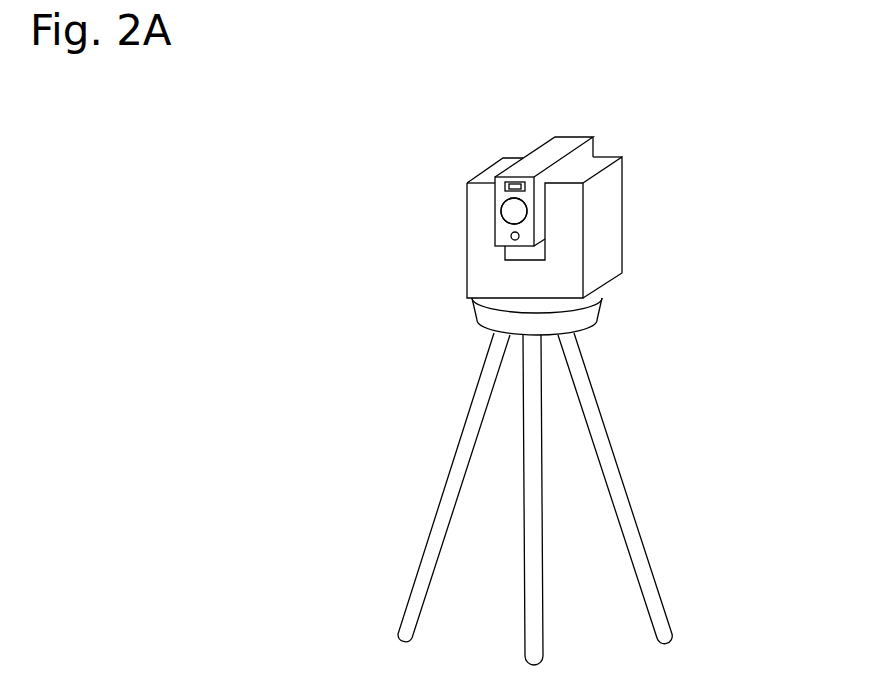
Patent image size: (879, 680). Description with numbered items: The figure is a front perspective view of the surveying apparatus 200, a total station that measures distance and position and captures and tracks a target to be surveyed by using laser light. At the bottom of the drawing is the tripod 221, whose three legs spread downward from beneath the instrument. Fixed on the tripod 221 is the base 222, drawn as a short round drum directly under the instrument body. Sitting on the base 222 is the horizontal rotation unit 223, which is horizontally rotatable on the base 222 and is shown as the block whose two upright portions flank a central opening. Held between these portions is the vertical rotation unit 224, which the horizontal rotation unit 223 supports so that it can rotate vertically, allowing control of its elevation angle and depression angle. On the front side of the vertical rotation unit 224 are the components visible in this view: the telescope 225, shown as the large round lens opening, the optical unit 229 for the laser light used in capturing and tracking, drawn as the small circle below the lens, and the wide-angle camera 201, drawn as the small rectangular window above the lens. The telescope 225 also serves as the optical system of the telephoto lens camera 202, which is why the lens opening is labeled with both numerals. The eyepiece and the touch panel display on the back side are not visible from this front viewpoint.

The surveying apparatus 200 is at (634, 180).
The wide-angle camera 201 is at (511, 182).
The telephoto lens camera 202 is at (514, 211).
The tripod 221 is at (607, 440).
The base 222 is at (603, 303).
The horizontal rotation unit 223 is at (615, 227).
The vertical rotation unit 224 is at (593, 137).
The telescope 225 is at (510, 212).
The optical unit 229 is at (512, 238).